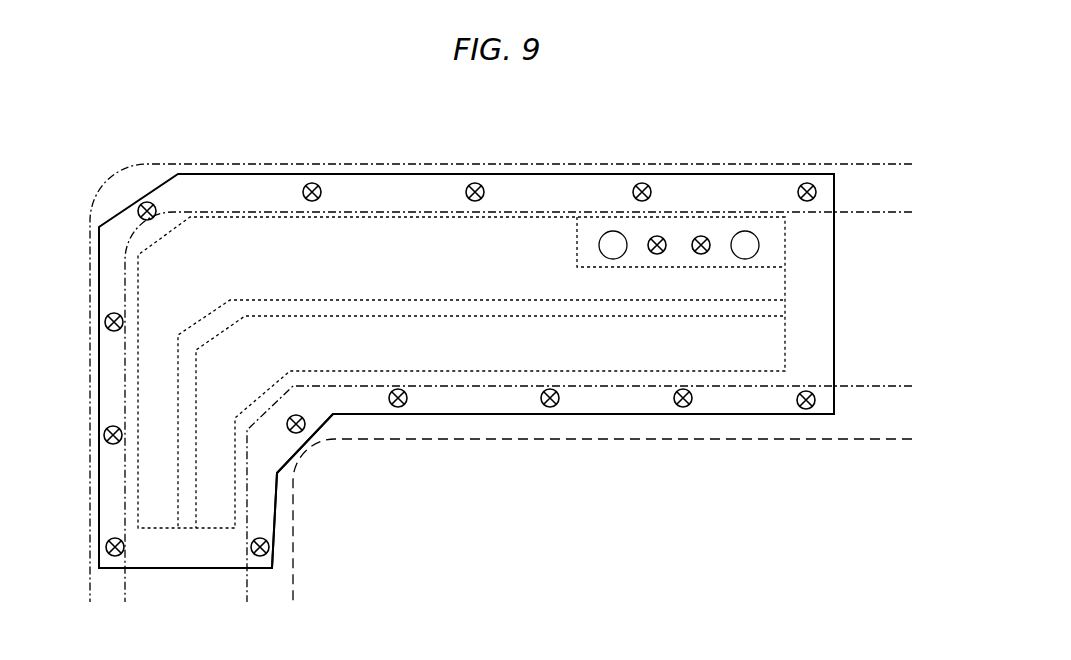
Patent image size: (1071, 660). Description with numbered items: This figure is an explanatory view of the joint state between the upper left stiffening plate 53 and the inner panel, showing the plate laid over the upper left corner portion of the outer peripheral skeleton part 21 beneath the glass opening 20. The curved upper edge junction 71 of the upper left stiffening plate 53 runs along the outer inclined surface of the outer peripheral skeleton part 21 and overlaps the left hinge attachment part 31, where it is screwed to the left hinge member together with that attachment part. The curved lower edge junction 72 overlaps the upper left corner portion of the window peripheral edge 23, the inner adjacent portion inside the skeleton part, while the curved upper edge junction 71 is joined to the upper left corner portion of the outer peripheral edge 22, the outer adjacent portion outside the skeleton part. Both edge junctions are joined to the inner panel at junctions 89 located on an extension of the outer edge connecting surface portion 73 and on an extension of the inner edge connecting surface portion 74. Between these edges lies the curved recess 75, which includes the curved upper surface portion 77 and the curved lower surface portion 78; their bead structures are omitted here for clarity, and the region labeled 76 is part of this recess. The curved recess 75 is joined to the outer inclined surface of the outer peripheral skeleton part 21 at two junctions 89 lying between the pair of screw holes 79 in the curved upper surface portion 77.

The glass opening 20 is at (848, 516).
The outer peripheral skeleton part 21 is at (852, 241).
The outer peripheral edge 22 is at (852, 200).
The window peripheral edge 23 is at (850, 398).
The left hinge attachment part 31 is at (772, 240).
The upper left stiffening plate 53 is at (135, 141).
The curved upper edge junction 71 is at (216, 190).
The curved lower edge junction 72 is at (497, 399).
The outer edge connecting surface portion 73 is at (203, 541).
The inner edge connecting surface portion 74 is at (820, 301).
The curved recess 75 is at (461, 297).
The first bonding portion 76 is at (262, 296).
The curved upper surface portion 77 is at (350, 235).
The curved lower surface portion 78 is at (413, 345).
The screw holes 79 is at (606, 233).
The junctions 89 is at (312, 183).